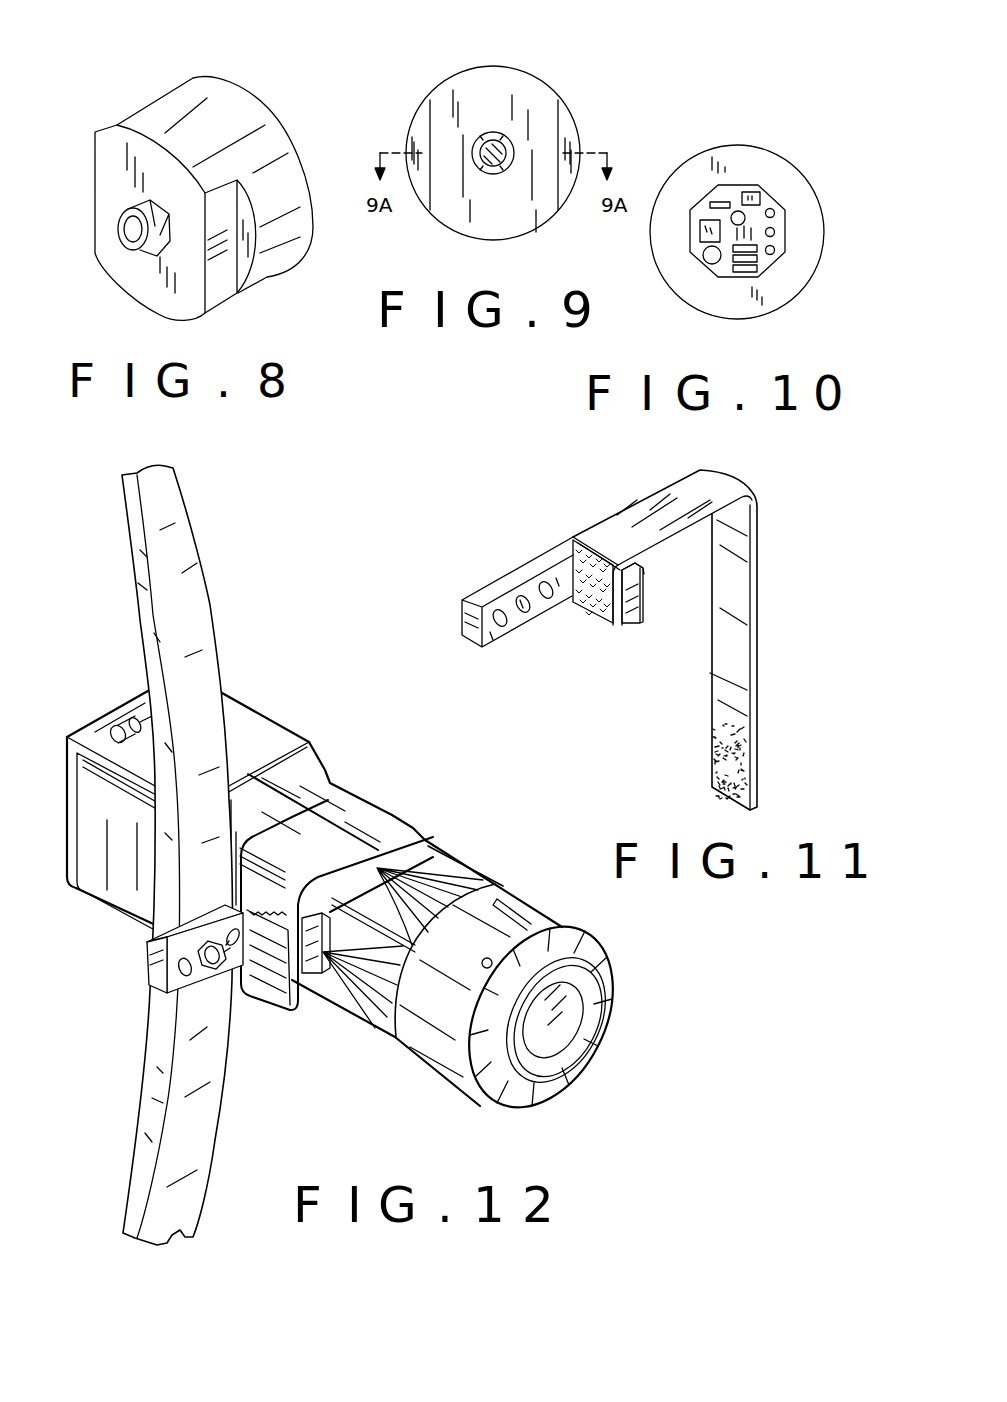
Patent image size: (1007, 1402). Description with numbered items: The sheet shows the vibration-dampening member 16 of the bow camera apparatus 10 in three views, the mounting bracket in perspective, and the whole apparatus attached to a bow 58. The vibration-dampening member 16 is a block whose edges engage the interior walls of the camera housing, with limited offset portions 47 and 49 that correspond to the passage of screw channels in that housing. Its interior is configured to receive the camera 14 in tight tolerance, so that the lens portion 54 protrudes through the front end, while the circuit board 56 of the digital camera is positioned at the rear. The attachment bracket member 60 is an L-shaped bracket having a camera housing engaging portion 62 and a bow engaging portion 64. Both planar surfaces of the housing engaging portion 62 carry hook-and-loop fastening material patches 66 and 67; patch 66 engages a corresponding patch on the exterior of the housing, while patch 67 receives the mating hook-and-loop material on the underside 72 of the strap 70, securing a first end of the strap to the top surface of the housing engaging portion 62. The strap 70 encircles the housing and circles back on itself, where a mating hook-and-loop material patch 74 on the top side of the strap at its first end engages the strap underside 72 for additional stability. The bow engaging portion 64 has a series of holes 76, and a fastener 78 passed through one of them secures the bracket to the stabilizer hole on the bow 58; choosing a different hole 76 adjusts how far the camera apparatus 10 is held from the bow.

In FIG. 12, the bow camera apparatus 10 is at (632, 1034).
In FIG. 8, the camera 14 is at (120, 237).
In FIG. 9, the camera 14 is at (487, 132).
In FIG. 8, the vibration-dampening member 16 is at (224, 104).
In FIG. 9, the vibration-dampening member 16 is at (527, 220).
In FIG. 10, the vibration-dampening member 16 is at (805, 260).
In FIG. 8, the offset portion 47 is at (249, 260).
In FIG. 9, the offset portion 47 is at (563, 130).
In FIG. 9, the offset portion 49 is at (422, 203).
In FIG. 9, the lens portion 54 is at (501, 133).
In FIG. 10, the circuit board 56 is at (758, 212).
In FIG. 12, the bow 58 is at (178, 576).
In FIG. 12, the attachment bracket member 60 is at (147, 983).
In FIG. 11, the camera housing engaging portion 62 is at (635, 623).
In FIG. 11, the bow engaging portion 64 is at (543, 562).
In FIG. 11, the hook-and-loop fastening material patch 66 is at (648, 572).
In FIG. 11, the hook-and-loop fastening material patch 67 is at (622, 627).
In FIG. 11, the strap 70 is at (757, 647).
In FIG. 11, the underside 72 is at (710, 766).
In FIG. 11, the mating hook-and-loop material patch 74 is at (597, 610).
In FIG. 11, the hole 76 is at (502, 623).
In FIG. 12, the fastener 78 is at (230, 972).